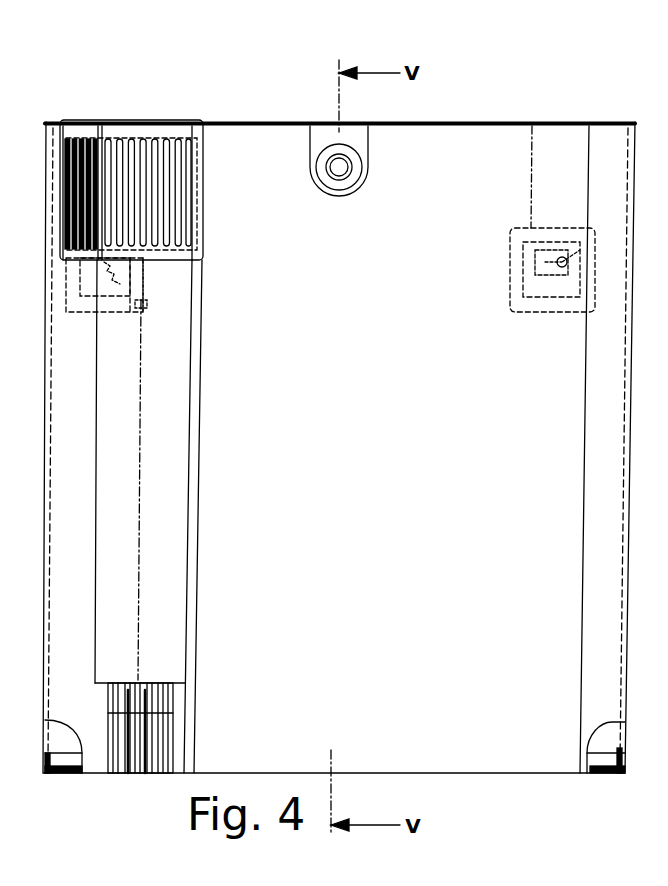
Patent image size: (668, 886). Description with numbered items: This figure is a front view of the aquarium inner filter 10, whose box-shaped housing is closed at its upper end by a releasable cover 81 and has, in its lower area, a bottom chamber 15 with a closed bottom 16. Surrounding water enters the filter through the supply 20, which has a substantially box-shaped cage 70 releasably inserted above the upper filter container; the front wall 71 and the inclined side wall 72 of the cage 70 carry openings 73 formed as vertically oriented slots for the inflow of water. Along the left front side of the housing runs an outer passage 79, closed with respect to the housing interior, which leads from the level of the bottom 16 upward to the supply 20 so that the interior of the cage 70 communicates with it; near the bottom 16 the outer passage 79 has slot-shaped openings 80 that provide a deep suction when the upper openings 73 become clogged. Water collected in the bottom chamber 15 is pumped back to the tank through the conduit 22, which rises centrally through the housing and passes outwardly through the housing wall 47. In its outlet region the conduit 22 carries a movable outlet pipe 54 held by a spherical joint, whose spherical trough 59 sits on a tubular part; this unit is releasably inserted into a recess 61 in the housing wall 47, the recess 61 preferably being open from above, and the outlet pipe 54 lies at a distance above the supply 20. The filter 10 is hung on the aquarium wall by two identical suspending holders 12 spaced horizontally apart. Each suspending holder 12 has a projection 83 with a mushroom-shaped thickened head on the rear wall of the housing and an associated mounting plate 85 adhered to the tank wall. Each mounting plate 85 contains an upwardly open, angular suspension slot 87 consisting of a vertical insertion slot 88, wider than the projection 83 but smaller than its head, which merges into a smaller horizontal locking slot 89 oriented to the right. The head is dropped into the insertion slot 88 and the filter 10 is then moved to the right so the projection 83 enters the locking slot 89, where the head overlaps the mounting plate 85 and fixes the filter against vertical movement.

The filter 10 is at (508, 105).
The suspending holder 12 is at (502, 318).
The bottom chamber 15 is at (615, 740).
The closed bottom 16 is at (597, 770).
The supply 20 is at (145, 140).
The conduit 22 is at (346, 168).
The housing wall 47 is at (384, 303).
The outlet pipe 54 is at (349, 183).
The spherical trough 59 is at (340, 165).
The recess 61 is at (368, 140).
The cage 70 is at (201, 124).
The front wall 71 is at (204, 258).
The inclined side wall 72 is at (88, 262).
The openings 73 is at (60, 183).
The outer passage 79 is at (170, 578).
The openings 80 is at (130, 755).
The releasable cover 81 is at (587, 123).
The projection 83 is at (142, 310).
The mounting plate 85 is at (144, 310).
The suspension slot 87 is at (551, 248).
The vertical insertion slot 88 is at (543, 260).
The horizontal locking slot 89 is at (106, 258).